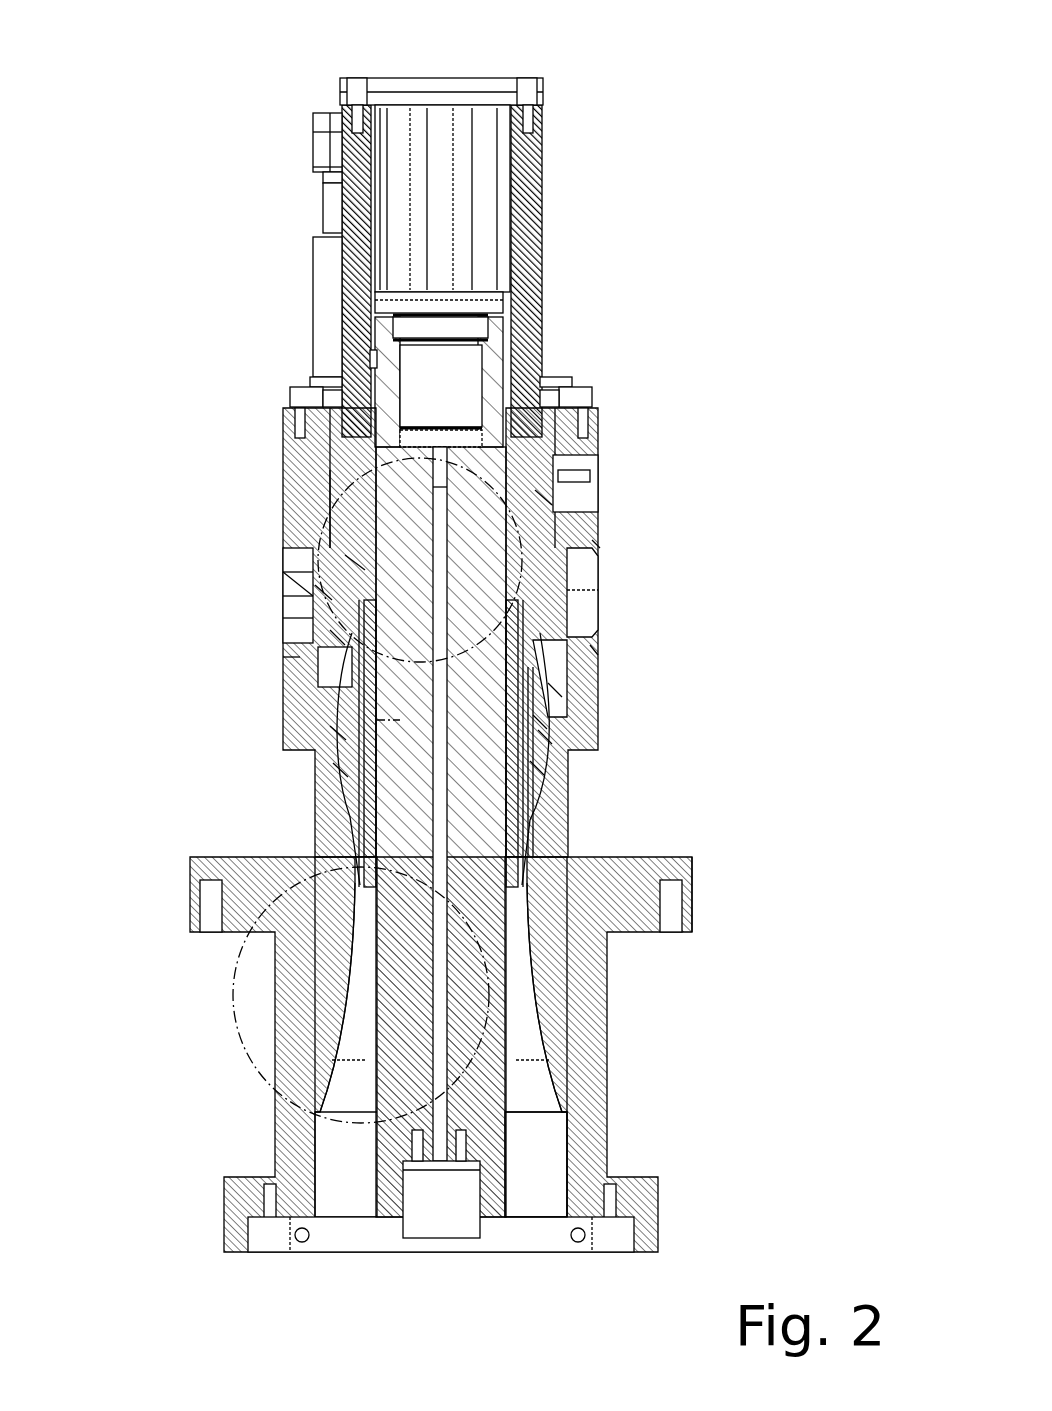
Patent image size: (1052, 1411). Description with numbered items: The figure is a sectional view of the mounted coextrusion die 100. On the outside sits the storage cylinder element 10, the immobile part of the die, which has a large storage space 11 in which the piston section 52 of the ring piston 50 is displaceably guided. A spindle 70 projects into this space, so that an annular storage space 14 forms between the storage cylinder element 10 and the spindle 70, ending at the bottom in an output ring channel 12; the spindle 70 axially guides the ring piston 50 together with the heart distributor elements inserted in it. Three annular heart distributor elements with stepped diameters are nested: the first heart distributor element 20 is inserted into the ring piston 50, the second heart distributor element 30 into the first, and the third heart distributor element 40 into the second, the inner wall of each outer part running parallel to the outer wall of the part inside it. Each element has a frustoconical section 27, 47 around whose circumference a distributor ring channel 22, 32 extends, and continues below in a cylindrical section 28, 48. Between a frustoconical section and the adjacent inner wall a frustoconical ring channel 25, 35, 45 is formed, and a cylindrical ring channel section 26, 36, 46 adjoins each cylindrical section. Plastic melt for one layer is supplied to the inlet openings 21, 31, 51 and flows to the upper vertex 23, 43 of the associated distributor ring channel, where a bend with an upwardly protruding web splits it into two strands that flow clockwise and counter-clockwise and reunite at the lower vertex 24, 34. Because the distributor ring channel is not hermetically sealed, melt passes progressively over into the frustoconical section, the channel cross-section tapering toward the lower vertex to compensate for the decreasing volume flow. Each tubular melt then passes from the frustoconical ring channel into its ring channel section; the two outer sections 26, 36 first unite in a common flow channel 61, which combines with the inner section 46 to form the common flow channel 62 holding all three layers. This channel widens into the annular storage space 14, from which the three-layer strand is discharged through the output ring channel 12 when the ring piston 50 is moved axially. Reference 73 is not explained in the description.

The coextrusion die 100 is at (452, 665).
The storage cylinder element 10 is at (285, 1128).
The storage space 11 is at (676, 1156).
The annular storage space 14 is at (536, 1165).
The output ring channel 12 is at (340, 1235).
The first heart distributor element 20 is at (600, 590).
The inlet opening 21 is at (300, 597).
The distributor ring channel 22 is at (412, 720).
The upper vertex 23 is at (540, 722).
The lower vertex 24 is at (338, 733).
The frustoconical ring channel 25 is at (537, 768).
The cylindrical ring channel section 26 is at (340, 770).
The frustoconical section 27 is at (545, 737).
The cylindrical section 28 is at (520, 835).
The second heart distributor element 30 is at (279, 464).
The inlet opening 31 is at (598, 503).
The distributor ring channel 32 is at (413, 528).
The lower vertex 34 is at (598, 650).
The frustoconical ring channel 35 is at (338, 637).
The cylindrical ring channel section 36 is at (352, 790).
The third heart distributor element 40 is at (279, 426).
The upper vertex 43 is at (323, 593).
The frustoconical ring channel 45 is at (355, 562).
The cylindrical ring channel section 46 is at (527, 861).
The frustoconical section 47 is at (600, 548).
The cylindrical section 48 is at (484, 993).
The ring piston 50 is at (283, 657).
The inlet opening 51 is at (555, 690).
The piston section 52 is at (344, 980).
The common flow channel 61 is at (694, 878).
The common flow channel 62 is at (347, 1025).
The spindle 70 is at (575, 1125).
The actuator 73 is at (465, 203).